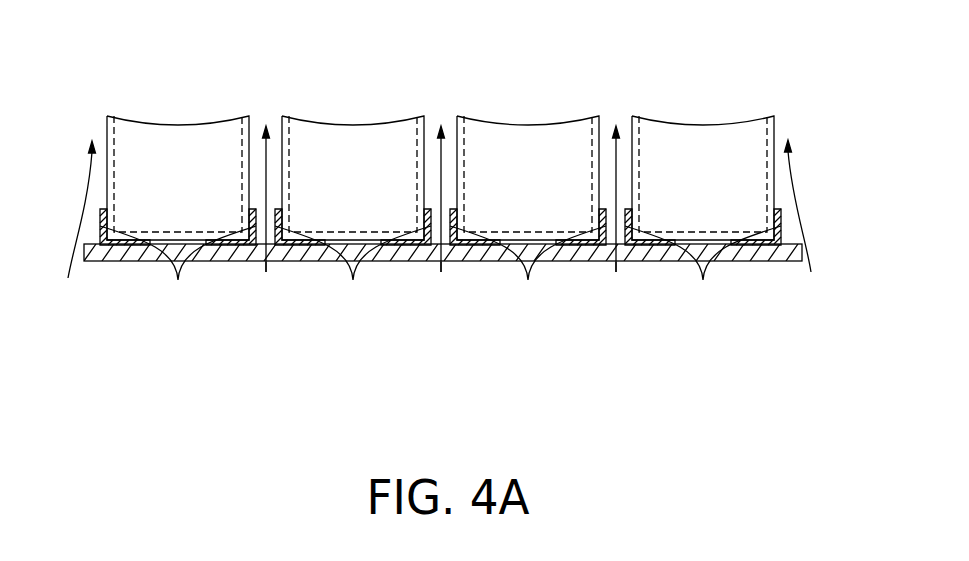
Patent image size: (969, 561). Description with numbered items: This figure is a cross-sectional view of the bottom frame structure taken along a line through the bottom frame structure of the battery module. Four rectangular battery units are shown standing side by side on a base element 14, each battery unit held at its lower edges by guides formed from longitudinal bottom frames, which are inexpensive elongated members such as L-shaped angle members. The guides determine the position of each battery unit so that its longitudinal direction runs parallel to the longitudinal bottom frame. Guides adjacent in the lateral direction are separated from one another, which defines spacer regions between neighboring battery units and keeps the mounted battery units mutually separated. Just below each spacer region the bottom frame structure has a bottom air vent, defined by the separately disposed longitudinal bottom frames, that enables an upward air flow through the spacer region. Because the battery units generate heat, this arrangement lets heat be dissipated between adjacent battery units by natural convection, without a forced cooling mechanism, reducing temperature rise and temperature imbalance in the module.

The base plate 14 is at (790, 252).